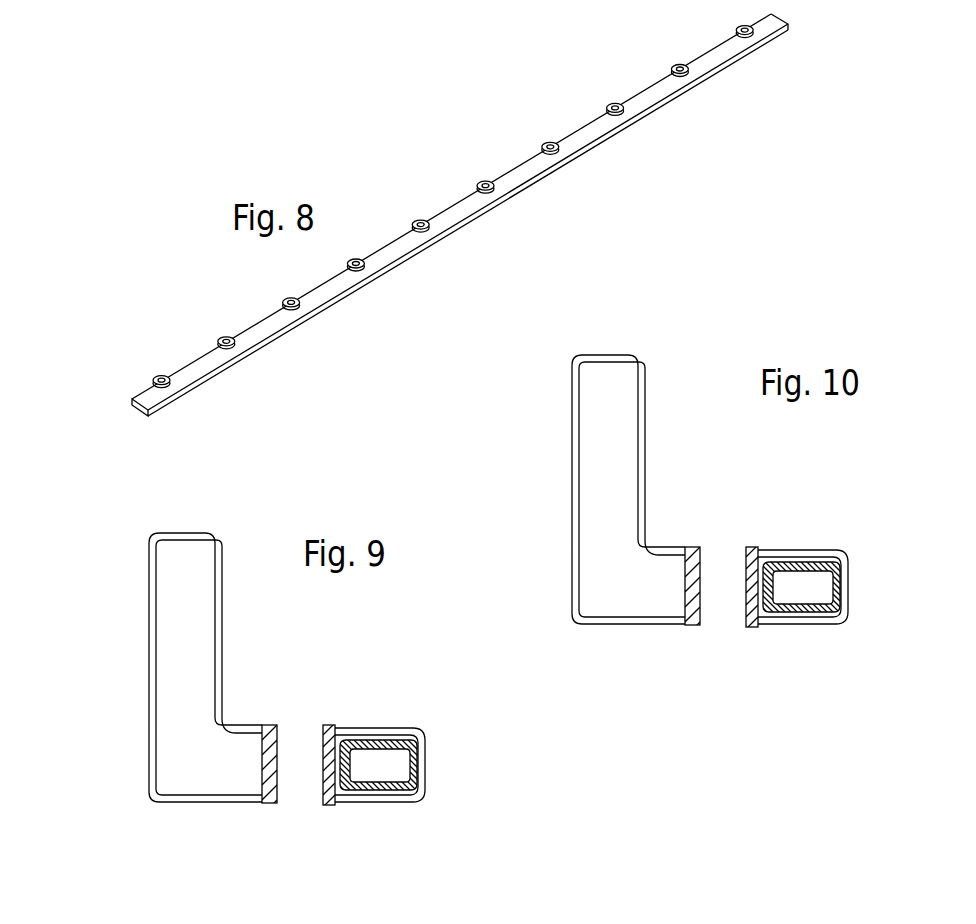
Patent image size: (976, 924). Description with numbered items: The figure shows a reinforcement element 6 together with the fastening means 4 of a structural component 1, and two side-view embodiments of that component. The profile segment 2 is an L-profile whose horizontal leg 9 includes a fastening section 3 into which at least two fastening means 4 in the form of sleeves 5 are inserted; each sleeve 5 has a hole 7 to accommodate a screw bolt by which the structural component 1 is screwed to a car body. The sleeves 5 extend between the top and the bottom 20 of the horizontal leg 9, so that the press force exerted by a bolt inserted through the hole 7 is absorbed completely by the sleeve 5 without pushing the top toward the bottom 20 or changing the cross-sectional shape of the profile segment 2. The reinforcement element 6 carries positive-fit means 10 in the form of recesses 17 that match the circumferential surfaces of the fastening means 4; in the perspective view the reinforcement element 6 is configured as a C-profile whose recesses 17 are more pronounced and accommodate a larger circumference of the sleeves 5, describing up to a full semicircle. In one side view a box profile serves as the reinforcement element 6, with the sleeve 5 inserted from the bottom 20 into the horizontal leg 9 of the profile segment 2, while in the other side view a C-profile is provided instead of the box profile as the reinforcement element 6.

In FIG. 9, the structural component 1 is at (267, 683).
In FIG. 10, the structural component 1 is at (696, 537).
In FIG. 9, the profile segment 2 is at (128, 624).
In FIG. 10, the profile segment 2 is at (562, 477).
In FIG. 9, the fastening section 3 is at (364, 745).
In FIG. 10, the fastening section 3 is at (809, 584).
In FIG. 8, the fastening means 4 is at (463, 207).
In FIG. 9, the fastening means 4 is at (280, 792).
In FIG. 10, the fastening means 4 is at (804, 620).
In FIG. 8, the sleeve 5 is at (752, 36).
In FIG. 9, the sleeve 5 is at (330, 797).
In FIG. 10, the sleeve 5 is at (755, 617).
In FIG. 8, the reinforcement element 6 is at (582, 137).
In FIG. 9, the reinforcement element 6 is at (418, 747).
In FIG. 10, the reinforcement element 6 is at (840, 588).
In FIG. 9, the hole 7 is at (306, 778).
In FIG. 10, the hole 7 is at (730, 601).
In FIG. 9, the horizontal leg 9 is at (364, 745).
In FIG. 10, the horizontal leg 9 is at (809, 584).
In FIG. 8, the positive-fit means 10 is at (478, 96).
In FIG. 8, the recess 17 is at (550, 145).
In FIG. 9, the bottom 20 is at (356, 810).
In FIG. 10, the bottom 20 is at (875, 680).